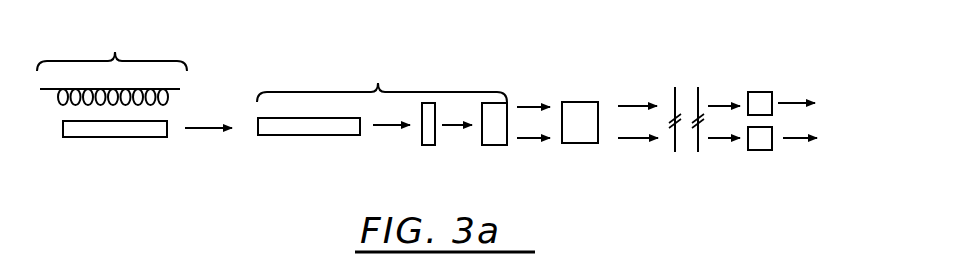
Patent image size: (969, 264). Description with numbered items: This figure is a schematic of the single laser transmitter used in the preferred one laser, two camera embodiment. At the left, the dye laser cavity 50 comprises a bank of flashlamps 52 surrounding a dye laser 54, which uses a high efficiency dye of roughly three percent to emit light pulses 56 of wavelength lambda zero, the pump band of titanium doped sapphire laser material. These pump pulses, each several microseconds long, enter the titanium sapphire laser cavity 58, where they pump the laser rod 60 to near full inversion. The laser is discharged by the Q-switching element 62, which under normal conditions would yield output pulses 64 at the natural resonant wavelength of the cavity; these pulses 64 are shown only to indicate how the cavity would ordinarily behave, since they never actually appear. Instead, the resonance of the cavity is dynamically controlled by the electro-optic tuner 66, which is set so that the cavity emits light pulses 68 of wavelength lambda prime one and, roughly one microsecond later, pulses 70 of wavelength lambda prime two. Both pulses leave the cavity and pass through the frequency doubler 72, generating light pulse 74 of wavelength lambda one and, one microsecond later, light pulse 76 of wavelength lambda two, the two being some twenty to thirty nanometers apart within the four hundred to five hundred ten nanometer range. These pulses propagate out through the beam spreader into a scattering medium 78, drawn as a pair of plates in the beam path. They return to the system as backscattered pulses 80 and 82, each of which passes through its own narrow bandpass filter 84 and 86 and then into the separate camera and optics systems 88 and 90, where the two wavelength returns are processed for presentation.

The dye laser cavity 50 is at (112, 48).
The bank of flashlamps 52 is at (175, 88).
The dye laser 54 is at (140, 137).
The light pulses 56 is at (212, 131).
The titanium sapphire laser cavity 58 is at (382, 80).
The laser rod 60 is at (327, 136).
The Q-switching element 62 is at (427, 145).
The output pulses 64 is at (392, 128).
The electro-optic tuner 66 is at (495, 145).
The light pulses 68 is at (541, 106).
The pulses 70 is at (537, 143).
The frequency doubler 72 is at (578, 101).
The light pulse 74 is at (641, 104).
The light pulse 76 is at (625, 138).
The scattering medium 78 is at (688, 83).
The backscattered pulse 80 is at (728, 103).
The backscattered pulse 82 is at (710, 140).
The narrow bandpass filter 84 is at (762, 92).
The narrow bandpass filter 86 is at (763, 150).
The camera and optics system 88 is at (840, 98).
The camera and optics system 90 is at (842, 142).